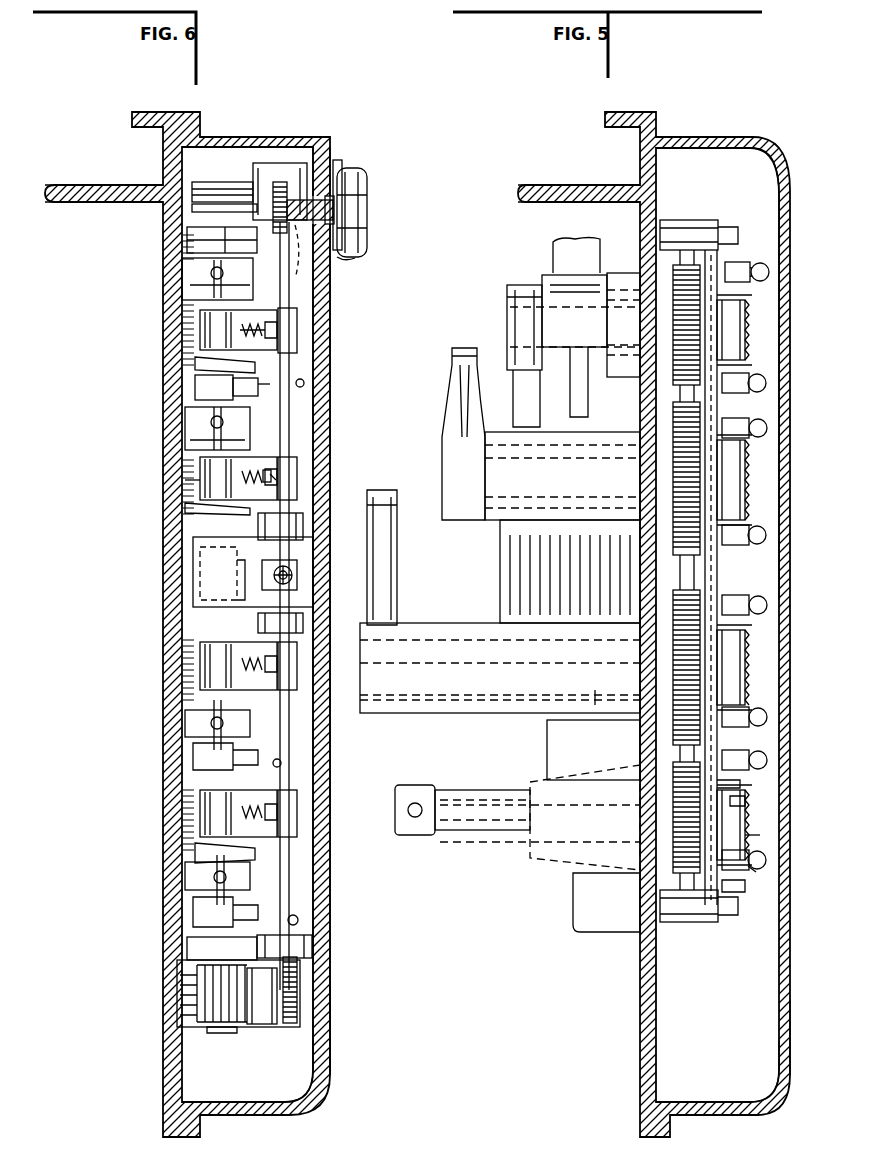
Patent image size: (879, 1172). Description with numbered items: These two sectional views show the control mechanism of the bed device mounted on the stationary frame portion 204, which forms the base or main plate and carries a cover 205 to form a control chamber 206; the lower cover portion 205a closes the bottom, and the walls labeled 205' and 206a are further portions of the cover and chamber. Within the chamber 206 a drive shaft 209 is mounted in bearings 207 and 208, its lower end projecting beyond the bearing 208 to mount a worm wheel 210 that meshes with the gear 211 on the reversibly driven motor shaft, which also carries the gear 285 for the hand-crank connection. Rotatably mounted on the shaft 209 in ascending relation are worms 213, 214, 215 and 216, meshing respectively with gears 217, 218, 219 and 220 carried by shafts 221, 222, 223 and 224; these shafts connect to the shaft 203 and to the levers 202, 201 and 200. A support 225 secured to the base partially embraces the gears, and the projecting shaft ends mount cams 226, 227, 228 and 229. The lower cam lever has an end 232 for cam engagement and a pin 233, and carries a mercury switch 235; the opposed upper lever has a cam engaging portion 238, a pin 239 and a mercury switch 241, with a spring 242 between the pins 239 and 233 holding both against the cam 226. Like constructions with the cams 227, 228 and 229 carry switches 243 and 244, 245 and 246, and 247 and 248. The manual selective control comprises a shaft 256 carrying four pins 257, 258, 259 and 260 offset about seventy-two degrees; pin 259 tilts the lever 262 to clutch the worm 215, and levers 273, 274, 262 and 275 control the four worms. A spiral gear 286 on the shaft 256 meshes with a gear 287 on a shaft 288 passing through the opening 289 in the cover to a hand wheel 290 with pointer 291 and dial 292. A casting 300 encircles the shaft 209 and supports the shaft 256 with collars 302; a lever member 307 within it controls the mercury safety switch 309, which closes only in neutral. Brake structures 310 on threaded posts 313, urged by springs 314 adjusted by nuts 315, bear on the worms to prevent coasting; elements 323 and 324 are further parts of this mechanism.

In FIG. 5, the lever 200 is at (512, 300).
In FIG. 5, the lever 201 is at (462, 425).
In FIG. 5, the lever 202 is at (461, 594).
In FIG. 5, the shaft 203 is at (497, 808).
In FIG. 6, the stationary portion of the bed device frame 204 is at (128, 162).
In FIG. 5, the stationary portion of the bed device frame 204 is at (562, 186).
In FIG. 5, the cover 205 is at (706, 118).
In FIG. 6, the housing wall 205' is at (351, 608).
In FIG. 6, the lower cover portion 205a is at (333, 1020).
In FIG. 5, the lower cover portion 205a is at (793, 1047).
In FIG. 6, the control chamber 206 is at (307, 393).
In FIG. 5, the control chamber 206 is at (743, 177).
In FIG. 6, the housing wall 206a is at (310, 1067).
In FIG. 5, the housing wall 206a is at (742, 1088).
In FIG. 6, the bearing 207 is at (265, 182).
In FIG. 6, the bearing 208 is at (307, 948).
In FIG. 6, the drive shaft 209 is at (220, 1033).
In FIG. 6, the worm wheel 210 is at (180, 992).
In FIG. 6, the gear 211 is at (240, 1027).
In FIG. 6, the worm 213 is at (187, 792).
In FIG. 6, the worm 214 is at (192, 640).
In FIG. 6, the worm 215 is at (183, 450).
In FIG. 6, the worm 216 is at (187, 297).
In FIG. 5, the gear 217 is at (690, 872).
In FIG. 5, the gear 218 is at (640, 577).
In FIG. 5, the gear 219 is at (697, 553).
In FIG. 5, the gear 220 is at (692, 277).
In FIG. 5, the shaft 221 is at (606, 868).
In FIG. 5, the shaft 222 is at (595, 690).
In FIG. 5, the shaft 223 is at (537, 498).
In FIG. 5, the shaft 224 is at (573, 357).
In FIG. 5, the support 225 is at (707, 923).
In FIG. 5, the cam 226 is at (737, 825).
In FIG. 5, the cam 227 is at (737, 667).
In FIG. 5, the cam 228 is at (737, 478).
In FIG. 5, the cam 229 is at (733, 327).
In FIG. 5, the end of lever 232 is at (765, 858).
In FIG. 5, the pin 233 is at (765, 872).
In FIG. 5, the mercury switch 235 is at (768, 893).
In FIG. 5, the cam engaging portion 238 is at (730, 802).
In FIG. 5, the pin 239 is at (730, 788).
In FIG. 5, the mercury switch 241 is at (768, 762).
In FIG. 5, the spring 242 is at (753, 827).
In FIG. 5, the mercury switch 243 is at (768, 722).
In FIG. 5, the mercury switch 244 is at (766, 603).
In FIG. 5, the mercury switch 245 is at (758, 535).
In FIG. 5, the mercury switch 246 is at (762, 428).
In FIG. 5, the mercury switch 247 is at (760, 383).
In FIG. 5, the mercury switch 248 is at (767, 270).
In FIG. 6, the shaft 256 is at (287, 428).
In FIG. 6, the pin 257 is at (300, 918).
In FIG. 6, the pin 258 is at (283, 763).
In FIG. 6, the pin 259 is at (303, 380).
In FIG. 6, the pin 260 is at (302, 250).
In FIG. 6, the lever 262 is at (188, 432).
In FIG. 6, the lever 273 is at (187, 892).
In FIG. 6, the lever 274 is at (188, 712).
In FIG. 6, the lever 275 is at (183, 268).
In FIG. 6, the gear 285 is at (292, 1023).
In FIG. 6, the spiral gear 286 is at (257, 208).
In FIG. 6, the gear 287 is at (283, 200).
In FIG. 6, the shaft 288 is at (331, 208).
In FIG. 6, the opening 289 is at (337, 261).
In FIG. 6, the hand wheel 290 is at (367, 183).
In FIG. 6, the pointer portion 291 is at (328, 200).
In FIG. 6, the dial arrangement 292 is at (337, 160).
In FIG. 6, the casting 300 is at (257, 555).
In FIG. 6, the collar 302 is at (307, 620).
In FIG. 6, the lever member 307 is at (303, 600).
In FIG. 6, the mercury switch 309 is at (303, 573).
In FIG. 6, the brake structure 310 is at (297, 817).
In FIG. 6, the threaded post 313 is at (360, 472).
In FIG. 6, the spring 314 is at (257, 467).
In FIG. 6, the nut 315 is at (263, 480).
In FIG. 6, the arm 323 is at (182, 503).
In FIG. 6, the pin 324 is at (182, 482).